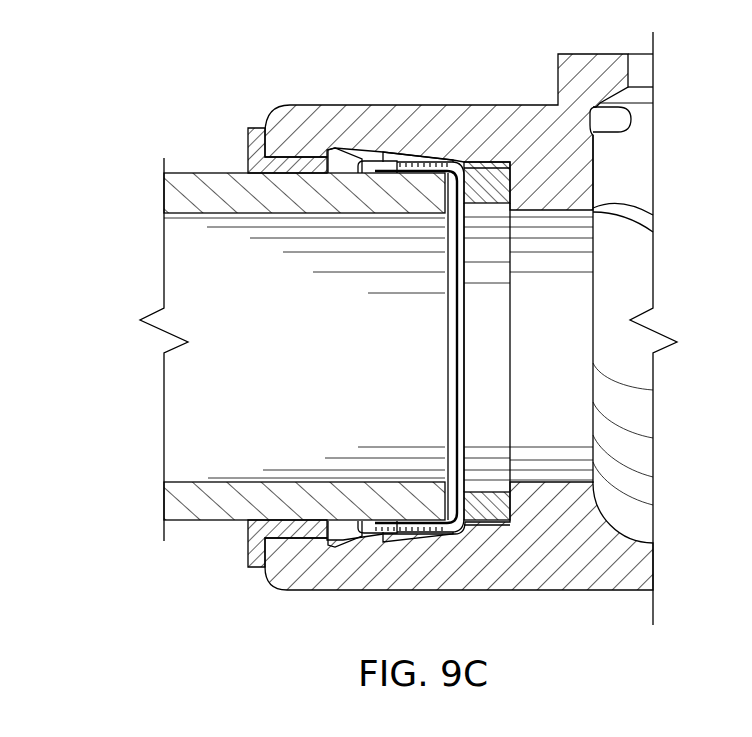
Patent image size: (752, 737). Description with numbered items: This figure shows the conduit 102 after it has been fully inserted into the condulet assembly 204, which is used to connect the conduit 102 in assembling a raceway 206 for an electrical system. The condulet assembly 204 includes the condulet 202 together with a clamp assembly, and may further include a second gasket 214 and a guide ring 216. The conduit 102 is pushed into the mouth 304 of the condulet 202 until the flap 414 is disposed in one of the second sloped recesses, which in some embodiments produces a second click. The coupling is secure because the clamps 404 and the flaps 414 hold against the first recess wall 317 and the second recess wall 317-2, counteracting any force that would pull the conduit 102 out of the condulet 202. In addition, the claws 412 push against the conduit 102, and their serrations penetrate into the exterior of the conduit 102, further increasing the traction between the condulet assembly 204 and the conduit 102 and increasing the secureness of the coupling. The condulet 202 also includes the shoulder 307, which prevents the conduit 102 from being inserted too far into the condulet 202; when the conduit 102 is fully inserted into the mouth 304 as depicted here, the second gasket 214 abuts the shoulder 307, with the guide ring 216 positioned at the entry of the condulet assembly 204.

The conduit 102 is at (215, 187).
The condulet 202 is at (302, 113).
The condulet assembly 204 is at (224, 584).
The raceway 206 is at (126, 474).
The second gasket 214 is at (487, 412).
The guide ring 216 is at (258, 130).
The mouth 304 is at (497, 120).
The shoulder 307 is at (563, 290).
The first recess wall 317 is at (332, 155).
The second recess wall 317-2 is at (392, 160).
The clamp 404 is at (368, 163).
The claw 412 is at (370, 175).
The flap 414 is at (400, 165).